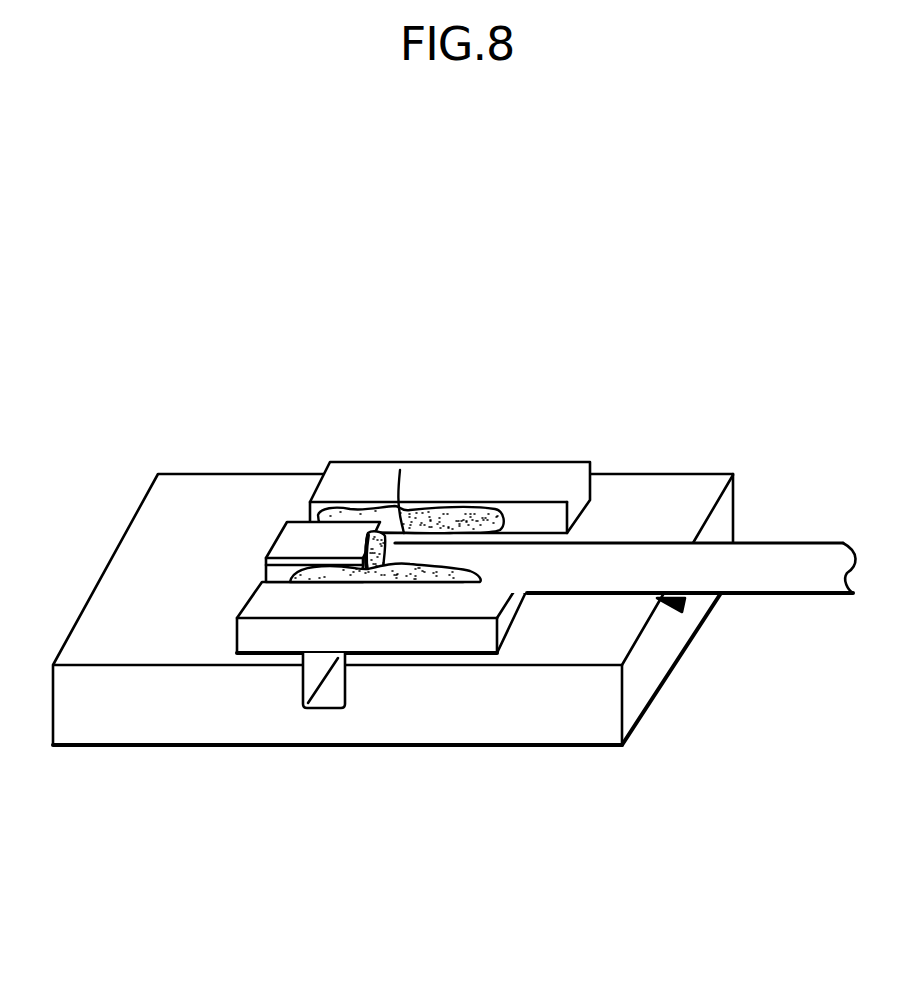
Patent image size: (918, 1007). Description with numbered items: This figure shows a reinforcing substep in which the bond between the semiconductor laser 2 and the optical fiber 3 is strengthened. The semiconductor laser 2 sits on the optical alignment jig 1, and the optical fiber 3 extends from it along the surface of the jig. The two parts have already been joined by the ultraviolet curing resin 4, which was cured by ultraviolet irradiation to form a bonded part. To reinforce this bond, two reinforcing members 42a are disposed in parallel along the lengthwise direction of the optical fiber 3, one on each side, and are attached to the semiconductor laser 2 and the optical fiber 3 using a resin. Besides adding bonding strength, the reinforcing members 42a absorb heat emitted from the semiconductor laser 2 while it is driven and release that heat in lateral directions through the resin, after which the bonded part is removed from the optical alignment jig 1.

The optical alignment jig 1 is at (517, 750).
The semiconductor laser 2 is at (298, 533).
The optical fiber 3 is at (654, 530).
The ultraviolet curing resin 4 is at (400, 470).
The reinforcing members 42a is at (361, 478).